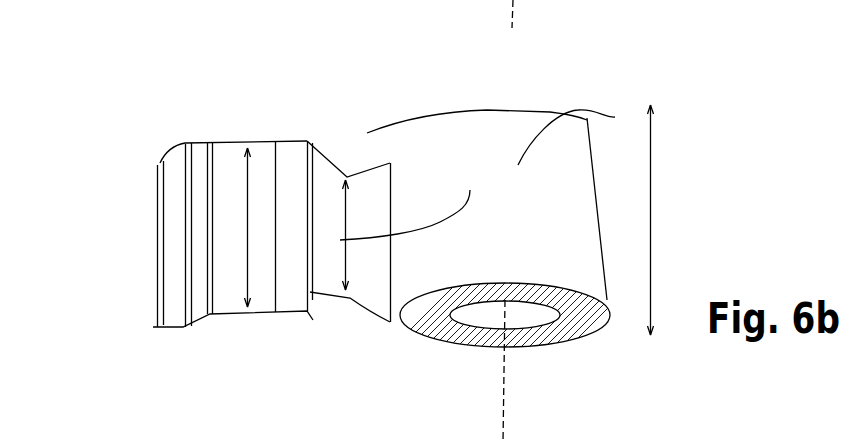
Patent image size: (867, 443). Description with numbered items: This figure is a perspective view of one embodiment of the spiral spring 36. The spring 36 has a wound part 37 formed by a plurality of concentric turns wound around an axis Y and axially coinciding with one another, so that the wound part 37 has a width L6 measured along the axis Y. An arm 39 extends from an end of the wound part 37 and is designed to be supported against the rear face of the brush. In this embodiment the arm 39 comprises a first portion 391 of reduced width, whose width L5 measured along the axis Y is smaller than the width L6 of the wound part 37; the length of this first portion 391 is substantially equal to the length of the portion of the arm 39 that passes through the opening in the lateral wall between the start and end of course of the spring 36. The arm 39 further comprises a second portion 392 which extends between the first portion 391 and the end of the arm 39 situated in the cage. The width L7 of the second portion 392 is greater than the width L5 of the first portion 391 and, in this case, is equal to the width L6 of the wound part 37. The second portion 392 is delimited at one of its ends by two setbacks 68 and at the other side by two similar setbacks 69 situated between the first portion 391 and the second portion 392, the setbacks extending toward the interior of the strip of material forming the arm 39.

The spring 36 is at (210, 80).
The second portion 392 is at (223, 208).
The first portion 391 is at (348, 175).
The setbacks 69 is at (333, 210).
The setbacks 68 is at (350, 170).
The arm 39 is at (325, 332).
The wound part 37 is at (615, 117).
The width of the first portion L5 is at (470, 190).
The width of the wound part L6 is at (652, 217).
The width of the second portion L7 is at (243, 247).
The axis Y is at (507, 397).